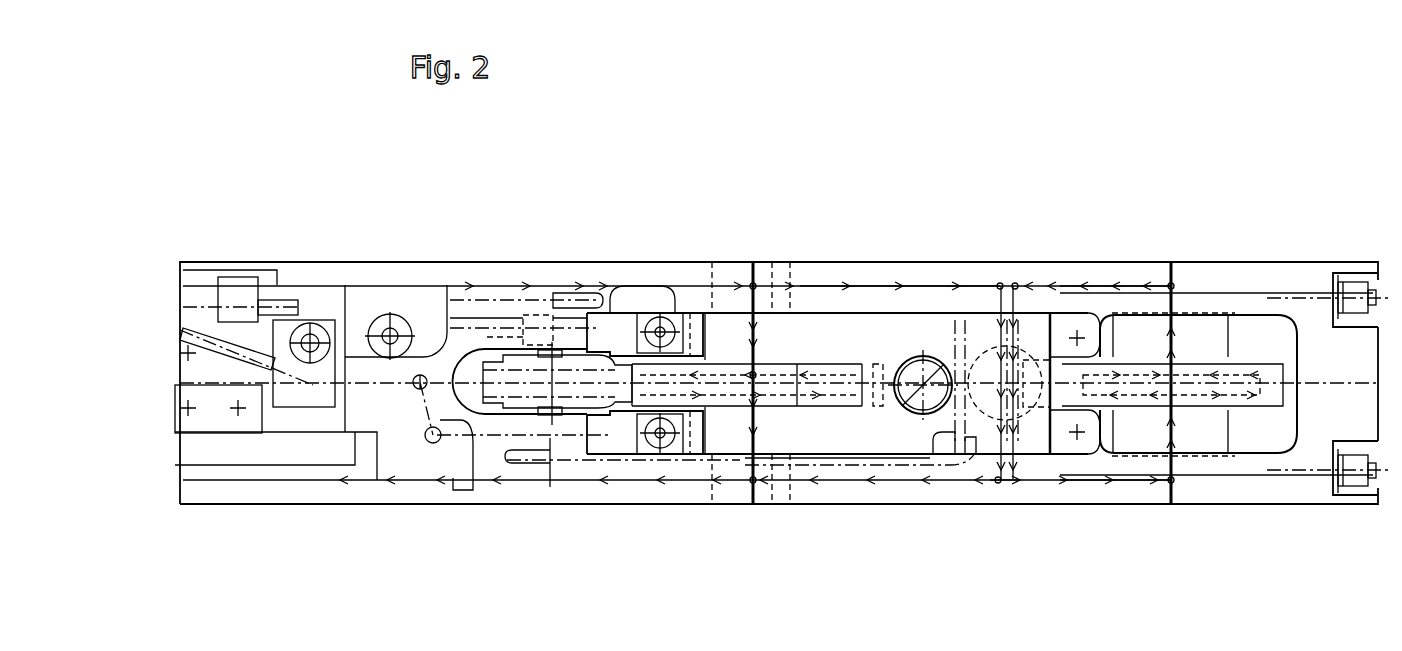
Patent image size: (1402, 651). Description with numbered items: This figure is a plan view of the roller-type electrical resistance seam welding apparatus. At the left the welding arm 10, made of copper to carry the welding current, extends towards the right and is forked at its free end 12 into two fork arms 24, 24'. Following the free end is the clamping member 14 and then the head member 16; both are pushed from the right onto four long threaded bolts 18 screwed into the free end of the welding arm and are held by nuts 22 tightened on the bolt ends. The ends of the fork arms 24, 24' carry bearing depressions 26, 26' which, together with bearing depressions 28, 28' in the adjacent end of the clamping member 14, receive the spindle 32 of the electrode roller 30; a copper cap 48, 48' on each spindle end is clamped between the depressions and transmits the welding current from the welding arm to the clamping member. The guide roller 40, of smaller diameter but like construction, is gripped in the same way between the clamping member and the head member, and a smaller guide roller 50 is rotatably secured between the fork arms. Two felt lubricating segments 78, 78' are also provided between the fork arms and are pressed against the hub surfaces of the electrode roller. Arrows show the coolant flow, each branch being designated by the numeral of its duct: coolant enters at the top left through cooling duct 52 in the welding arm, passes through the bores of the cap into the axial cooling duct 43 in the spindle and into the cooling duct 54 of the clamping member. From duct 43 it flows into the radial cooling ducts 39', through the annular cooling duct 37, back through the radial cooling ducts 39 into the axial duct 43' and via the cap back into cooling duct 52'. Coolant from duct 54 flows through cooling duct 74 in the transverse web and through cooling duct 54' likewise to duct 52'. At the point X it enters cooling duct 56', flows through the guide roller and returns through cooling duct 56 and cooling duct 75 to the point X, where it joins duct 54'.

The welding arm 10 is at (445, 262).
The free end 12 is at (693, 255).
The clamping member 14 is at (997, 262).
The head member 16 is at (1240, 262).
The threaded bolts 18 is at (1378, 296).
The nuts 22 is at (1352, 282).
The fork arm 24 is at (562, 255).
The fork arm 24' is at (588, 496).
The bearing depression 26 is at (730, 239).
The bearing depression 26' is at (667, 537).
The bearing depression 28 is at (823, 239).
The bearing depression 28' is at (809, 537).
The electrode roller 30 is at (637, 393).
The spindle 32 is at (745, 490).
The annular cooling duct 37 is at (664, 386).
The radial cooling ducts 39 is at (737, 419).
The radial cooling ducts 39' is at (736, 347).
The guide roller 40 is at (1240, 430).
The axial cooling duct 43 is at (770, 355).
The axial cooling duct 43' is at (774, 430).
The cap 48 is at (789, 239).
The cap 48' is at (741, 537).
The smaller guide roller 50 is at (513, 403).
The cooling duct 52 is at (526, 236).
The cooling duct 52' is at (460, 544).
The cooling duct 54 is at (900, 225).
The cooling duct 54' is at (778, 548).
The cooling duct 56 is at (1115, 225).
The cooling duct 56' is at (1115, 550).
The cooling duct 74 is at (1004, 352).
The cooling duct 75 is at (1016, 352).
The lubricating segment 78 is at (644, 260).
The lubricating segment 78' is at (626, 516).
The point X is at (1000, 483).